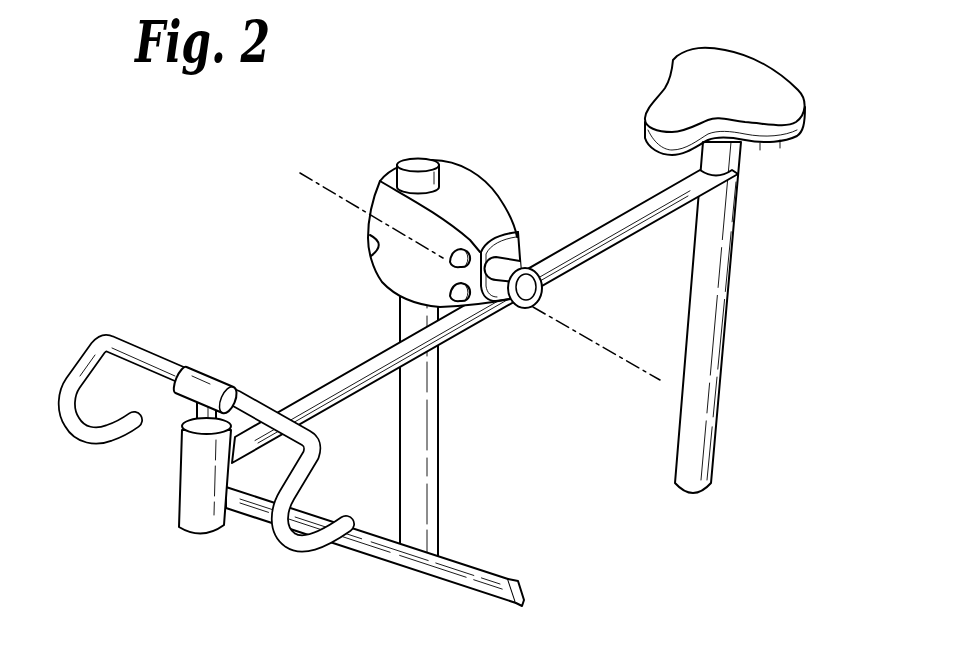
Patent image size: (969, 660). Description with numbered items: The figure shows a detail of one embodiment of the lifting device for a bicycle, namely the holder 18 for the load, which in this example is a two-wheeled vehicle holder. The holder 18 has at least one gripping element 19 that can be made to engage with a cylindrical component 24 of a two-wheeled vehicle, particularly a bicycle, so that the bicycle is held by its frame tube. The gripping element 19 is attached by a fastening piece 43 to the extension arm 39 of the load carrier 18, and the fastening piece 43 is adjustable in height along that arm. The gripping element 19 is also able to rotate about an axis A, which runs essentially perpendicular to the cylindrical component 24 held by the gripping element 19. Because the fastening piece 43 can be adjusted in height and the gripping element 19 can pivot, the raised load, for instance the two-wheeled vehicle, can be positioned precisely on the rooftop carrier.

The holder 18 is at (436, 327).
The gripping element 19 is at (523, 310).
The cylindrical component 24 is at (323, 405).
The extension arm 39 is at (436, 431).
The fastening piece 43 is at (483, 205).
The axis A is at (612, 343).